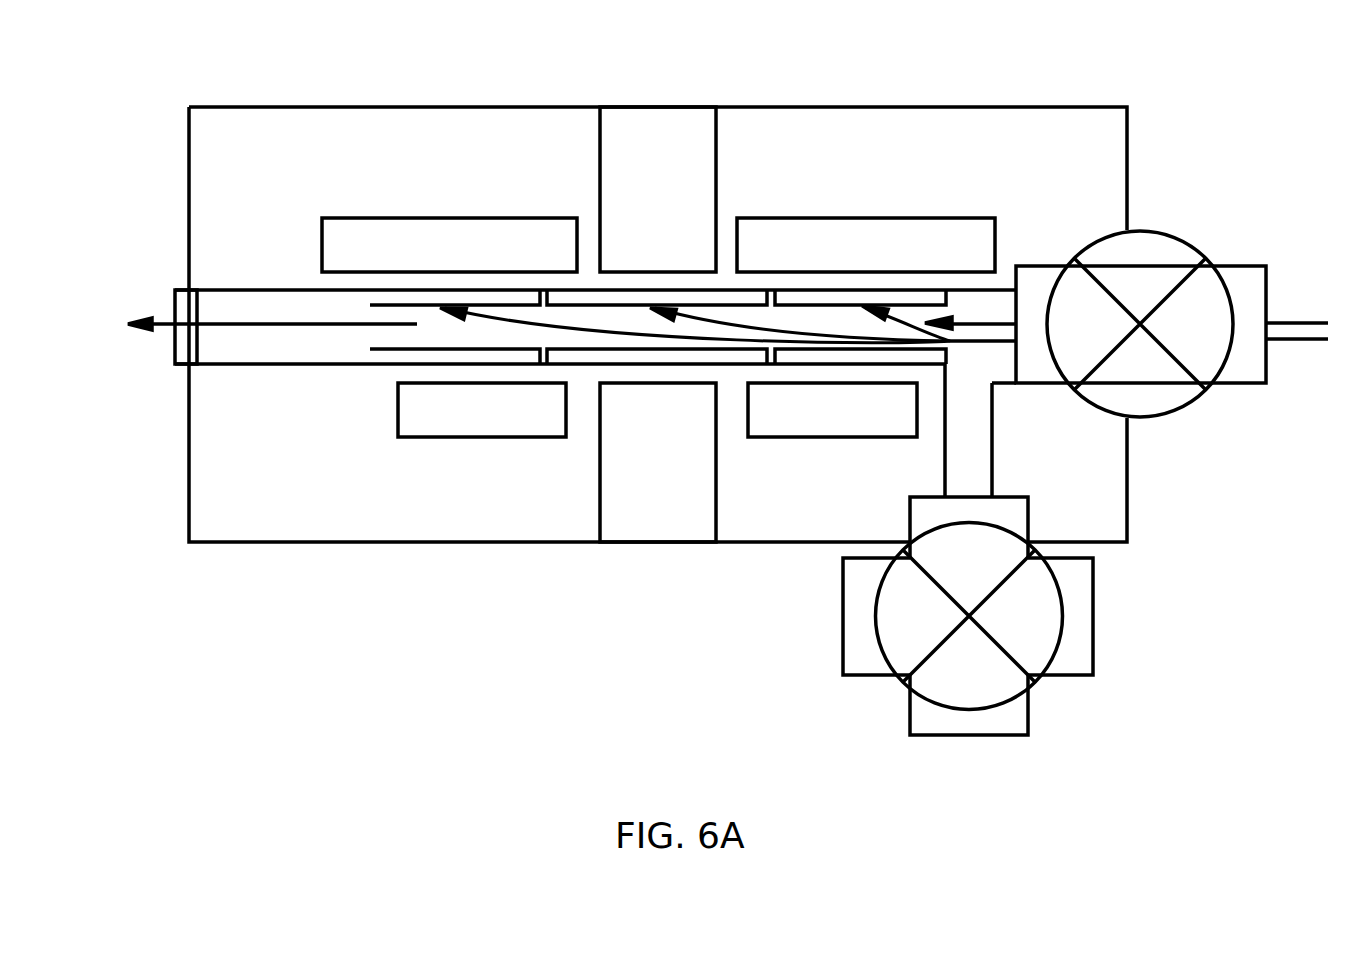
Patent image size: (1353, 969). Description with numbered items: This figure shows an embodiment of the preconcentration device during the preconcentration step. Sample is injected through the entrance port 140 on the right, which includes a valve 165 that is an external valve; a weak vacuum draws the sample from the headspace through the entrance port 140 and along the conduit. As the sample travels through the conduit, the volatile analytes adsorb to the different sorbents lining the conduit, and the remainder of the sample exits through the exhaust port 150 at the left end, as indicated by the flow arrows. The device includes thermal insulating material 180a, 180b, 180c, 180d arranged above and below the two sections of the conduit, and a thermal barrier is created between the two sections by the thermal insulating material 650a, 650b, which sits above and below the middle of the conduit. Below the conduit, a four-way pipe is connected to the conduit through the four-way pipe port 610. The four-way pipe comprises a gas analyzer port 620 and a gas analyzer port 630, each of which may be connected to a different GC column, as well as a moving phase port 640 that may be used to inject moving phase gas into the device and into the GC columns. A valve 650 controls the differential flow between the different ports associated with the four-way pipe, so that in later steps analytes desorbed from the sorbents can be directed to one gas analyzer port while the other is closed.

The exhaust port 150 is at (172, 358).
The thermal insulating material 650a is at (656, 106).
The thermal insulating material 650b is at (660, 543).
The thermal insulating material 180a is at (449, 245).
The thermal insulating material 180b is at (866, 245).
The thermal insulating material 180c is at (482, 410).
The thermal insulating material 180d is at (832, 410).
The entrance port 140 is at (1030, 266).
The valve 165 is at (1163, 233).
The four-way pipe port 610 is at (1008, 497).
The gas analyzer port 620 is at (1093, 625).
The gas analyzer port 630 is at (843, 620).
The valve 650 is at (905, 680).
The moving phase port 640 is at (980, 737).